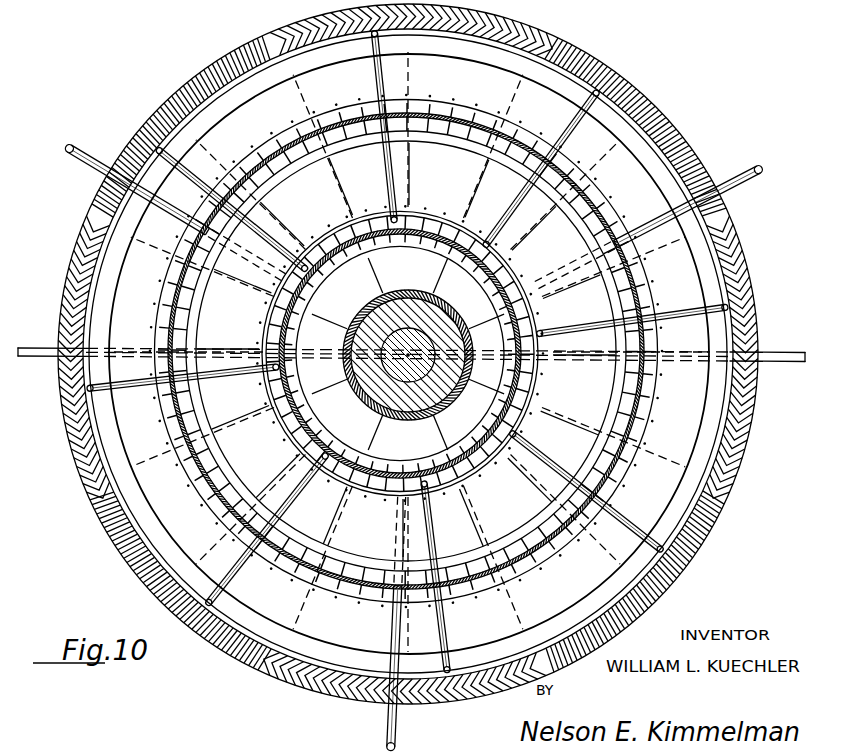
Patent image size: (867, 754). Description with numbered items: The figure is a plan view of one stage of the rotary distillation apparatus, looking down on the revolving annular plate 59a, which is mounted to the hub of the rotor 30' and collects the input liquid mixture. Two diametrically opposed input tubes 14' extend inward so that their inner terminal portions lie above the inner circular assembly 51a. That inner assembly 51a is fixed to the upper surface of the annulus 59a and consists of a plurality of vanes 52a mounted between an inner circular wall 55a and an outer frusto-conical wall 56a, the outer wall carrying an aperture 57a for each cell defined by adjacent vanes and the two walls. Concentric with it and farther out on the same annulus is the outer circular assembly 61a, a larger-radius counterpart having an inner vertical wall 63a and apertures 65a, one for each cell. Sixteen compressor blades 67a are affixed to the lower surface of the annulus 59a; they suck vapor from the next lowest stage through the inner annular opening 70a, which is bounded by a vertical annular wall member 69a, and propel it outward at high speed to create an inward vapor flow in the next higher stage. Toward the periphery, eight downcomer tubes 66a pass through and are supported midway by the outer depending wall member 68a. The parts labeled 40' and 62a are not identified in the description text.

The rotor 30' is at (432, 411).
The input tubes 14' is at (407, 336).
The support rods 40' is at (417, 377).
The revolving annular plate 59a is at (234, 118).
The outer circular assembly 61a is at (342, 605).
The inner vertical wall 63a is at (590, 238).
The compressor blades 67a is at (542, 86).
The vanes 52a is at (481, 472).
The inner circular assembly 51a is at (372, 490).
The vertical annular wall member 69a is at (437, 214).
The inner annular opening 70a is at (350, 230).
The apertures 57a is at (311, 452).
The outer frusto-conical wall 56a is at (288, 396).
The inner circular wall 55a is at (357, 380).
The downcomer tubes 66a is at (607, 112).
The outer depending wall member 68a is at (353, 112).
The apertures 65a is at (298, 578).
The tubular strut 62a is at (545, 562).